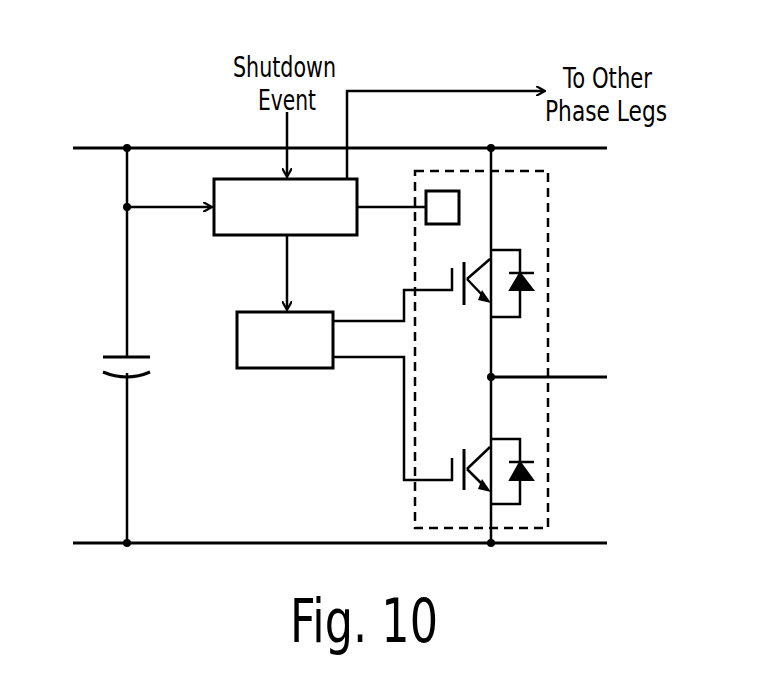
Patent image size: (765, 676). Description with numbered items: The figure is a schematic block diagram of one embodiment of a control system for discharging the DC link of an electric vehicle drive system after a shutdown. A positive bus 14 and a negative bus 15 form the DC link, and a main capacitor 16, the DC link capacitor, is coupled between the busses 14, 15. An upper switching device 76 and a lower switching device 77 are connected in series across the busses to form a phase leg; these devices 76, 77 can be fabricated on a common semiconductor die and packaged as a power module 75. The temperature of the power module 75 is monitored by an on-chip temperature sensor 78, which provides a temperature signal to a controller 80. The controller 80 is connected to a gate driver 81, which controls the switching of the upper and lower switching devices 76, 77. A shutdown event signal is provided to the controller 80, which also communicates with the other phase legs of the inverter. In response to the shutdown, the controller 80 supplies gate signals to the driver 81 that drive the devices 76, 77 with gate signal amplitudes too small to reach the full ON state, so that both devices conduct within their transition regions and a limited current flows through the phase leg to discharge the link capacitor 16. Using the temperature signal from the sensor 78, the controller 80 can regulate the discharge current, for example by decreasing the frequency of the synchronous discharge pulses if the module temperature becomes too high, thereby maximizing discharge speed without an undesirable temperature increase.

The positive bus 14 is at (177, 145).
The negative bus 15 is at (185, 540).
The main capacitor 16 is at (117, 355).
The power module 75 is at (516, 323).
The upper switching device 76 is at (474, 298).
The lower switching device 77 is at (508, 505).
The temperature sensor 78 is at (446, 191).
The controller 80 is at (214, 235).
The gate driver 81 is at (286, 370).